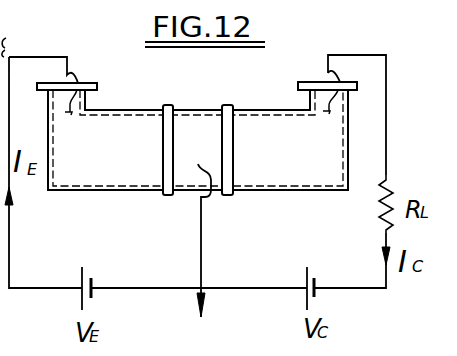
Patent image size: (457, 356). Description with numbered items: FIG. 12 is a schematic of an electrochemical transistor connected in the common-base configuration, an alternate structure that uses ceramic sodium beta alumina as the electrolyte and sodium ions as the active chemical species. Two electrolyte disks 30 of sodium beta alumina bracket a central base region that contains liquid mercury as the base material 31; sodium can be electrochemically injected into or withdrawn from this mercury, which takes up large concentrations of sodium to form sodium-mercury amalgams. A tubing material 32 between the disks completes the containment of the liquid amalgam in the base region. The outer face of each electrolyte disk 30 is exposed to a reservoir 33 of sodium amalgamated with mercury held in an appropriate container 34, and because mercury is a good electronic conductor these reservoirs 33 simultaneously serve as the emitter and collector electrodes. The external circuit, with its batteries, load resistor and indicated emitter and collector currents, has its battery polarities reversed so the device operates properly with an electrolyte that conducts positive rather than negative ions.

The electrolyte disks 30 is at (166, 105).
The base material 31 is at (212, 157).
The tubing material 32 is at (204, 108).
The reservoirs 33 is at (198, 150).
The containers 34 is at (78, 192).